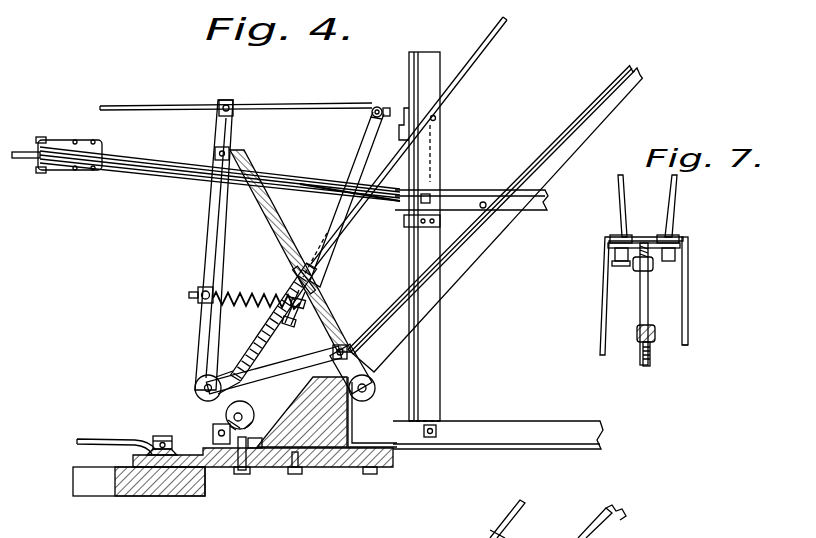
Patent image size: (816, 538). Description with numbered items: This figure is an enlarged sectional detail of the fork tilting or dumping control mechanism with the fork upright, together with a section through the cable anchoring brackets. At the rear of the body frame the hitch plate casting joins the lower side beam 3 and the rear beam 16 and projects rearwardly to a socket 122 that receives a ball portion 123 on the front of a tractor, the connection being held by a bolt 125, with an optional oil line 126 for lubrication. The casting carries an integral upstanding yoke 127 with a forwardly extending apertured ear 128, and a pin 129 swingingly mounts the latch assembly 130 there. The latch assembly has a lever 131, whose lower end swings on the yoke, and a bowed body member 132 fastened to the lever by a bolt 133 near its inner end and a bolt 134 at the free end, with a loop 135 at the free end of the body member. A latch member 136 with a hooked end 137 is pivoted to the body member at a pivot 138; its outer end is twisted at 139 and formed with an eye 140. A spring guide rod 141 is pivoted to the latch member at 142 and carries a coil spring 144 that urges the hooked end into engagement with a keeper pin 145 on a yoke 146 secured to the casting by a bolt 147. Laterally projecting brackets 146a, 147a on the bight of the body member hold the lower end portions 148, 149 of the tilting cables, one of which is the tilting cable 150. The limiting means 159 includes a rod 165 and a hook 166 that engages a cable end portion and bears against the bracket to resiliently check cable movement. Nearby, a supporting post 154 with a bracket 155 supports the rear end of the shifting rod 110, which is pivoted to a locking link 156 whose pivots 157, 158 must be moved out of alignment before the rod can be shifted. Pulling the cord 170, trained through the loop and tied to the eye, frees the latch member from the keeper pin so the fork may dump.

In FIG. 4, the lower side beam 3 is at (545, 440).
In FIG. 4, the rear beam 16 is at (562, 172).
In FIG. 4, the shifting rod 110 is at (280, 168).
In FIG. 4, the socket 122 is at (176, 450).
In FIG. 4, the ball portion 123 is at (160, 497).
In FIG. 4, the bolt 125 is at (163, 435).
In FIG. 4, the oil line 126 is at (108, 440).
In FIG. 4, the upstanding yoke 127 is at (345, 466).
In FIG. 4, the apertured ear 128 is at (360, 398).
In FIG. 4, the pin 129 is at (374, 380).
In FIG. 4, the latch assembly 130 is at (208, 240).
In FIG. 4, the lever 131 is at (282, 236).
In FIG. 4, the bowed body member 132 is at (205, 262).
In FIG. 7, the bowed body member 132 is at (641, 300).
In FIG. 4, the bolt 133 is at (256, 410).
In FIG. 4, the bolt 134 is at (215, 152).
In FIG. 4, the loop 135 is at (230, 99).
In FIG. 4, the latch member 136 is at (360, 160).
In FIG. 7, the latch member 136 is at (652, 360).
In FIG. 4, the hooked end 137 is at (299, 475).
In FIG. 7, the pivot 138 is at (656, 264).
In FIG. 4, the twisted portion 139 is at (372, 134).
In FIG. 4, the eye 140 is at (378, 105).
In FIG. 4, the spring guide rod 141 is at (195, 300).
In FIG. 4, the pivotal connection 142 is at (290, 296).
In FIG. 4, the coil spring 144 is at (238, 290).
In FIG. 4, the keeper pin 145 is at (283, 474).
In FIG. 4, the yoke 146 is at (252, 466).
In FIG. 4, the laterally projecting bracket 146a is at (200, 378).
In FIG. 7, the laterally projecting bracket 146a is at (612, 254).
In FIG. 4, the bolt 147 is at (240, 476).
In FIG. 7, the laterally projecting bracket 147a is at (690, 246).
In FIG. 7, the lower end portion of tilting cable 148 is at (619, 212).
In FIG. 7, the lower end portion of tilting cable 149 is at (678, 210).
In FIG. 4, the tilting cable 150 is at (483, 43).
In FIG. 4, the supporting post 154 is at (441, 392).
In FIG. 4, the bracket 155 is at (407, 167).
In FIG. 4, the locking link 156 is at (462, 190).
In FIG. 4, the pivot 157 is at (412, 216).
In FIG. 4, the pivot 158 is at (485, 200).
In FIG. 4, the limiting means 159 is at (307, 309).
In FIG. 7, the limiting means 159 is at (696, 336).
In FIG. 4, the rod 165 is at (297, 335).
In FIG. 7, the rod 165 is at (690, 302).
In FIG. 4, the hook 166 is at (313, 285).
In FIG. 7, the hook 166 is at (686, 236).
In FIG. 4, the cord 170 is at (322, 101).